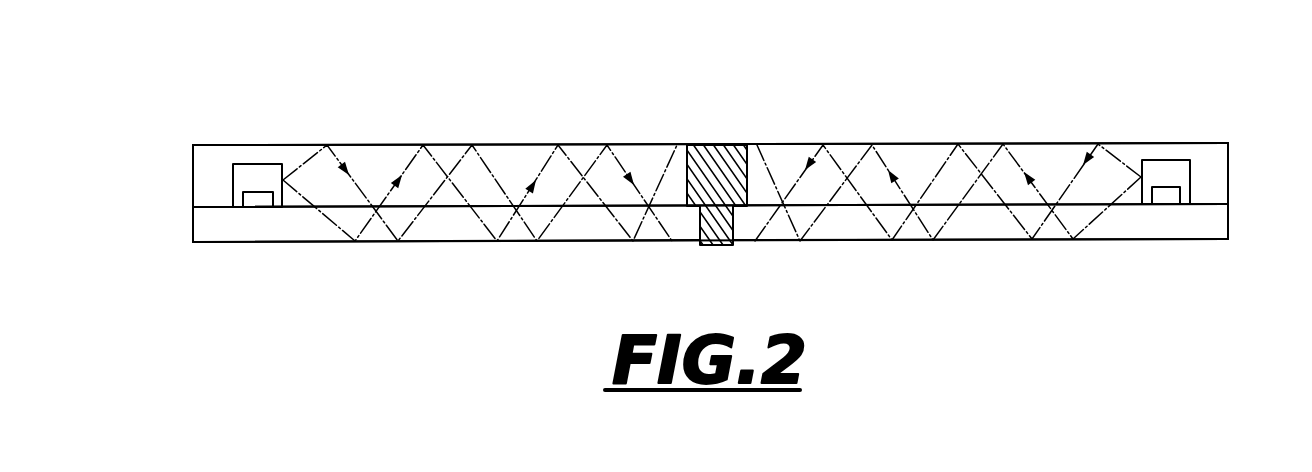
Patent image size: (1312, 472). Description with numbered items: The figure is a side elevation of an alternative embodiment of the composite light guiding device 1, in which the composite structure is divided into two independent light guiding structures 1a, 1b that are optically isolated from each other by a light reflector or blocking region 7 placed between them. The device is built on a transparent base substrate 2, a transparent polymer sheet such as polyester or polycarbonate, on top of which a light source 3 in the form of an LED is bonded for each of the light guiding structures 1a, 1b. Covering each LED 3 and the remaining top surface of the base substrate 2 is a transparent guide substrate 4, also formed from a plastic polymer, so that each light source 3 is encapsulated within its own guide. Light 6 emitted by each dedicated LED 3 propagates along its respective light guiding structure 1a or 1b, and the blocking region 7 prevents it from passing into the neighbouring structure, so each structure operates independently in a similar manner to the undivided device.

The composite light guiding device 1 is at (1222, 83).
The light guiding structure 1a is at (1076, 258).
The light guiding structure 1b is at (413, 262).
The transparent base substrate 2 is at (210, 227).
The light source 3 is at (261, 176).
The transparent guide substrate 4 is at (210, 167).
The light ray 6 is at (941, 150).
The light reflector or blocking region 7 is at (713, 152).